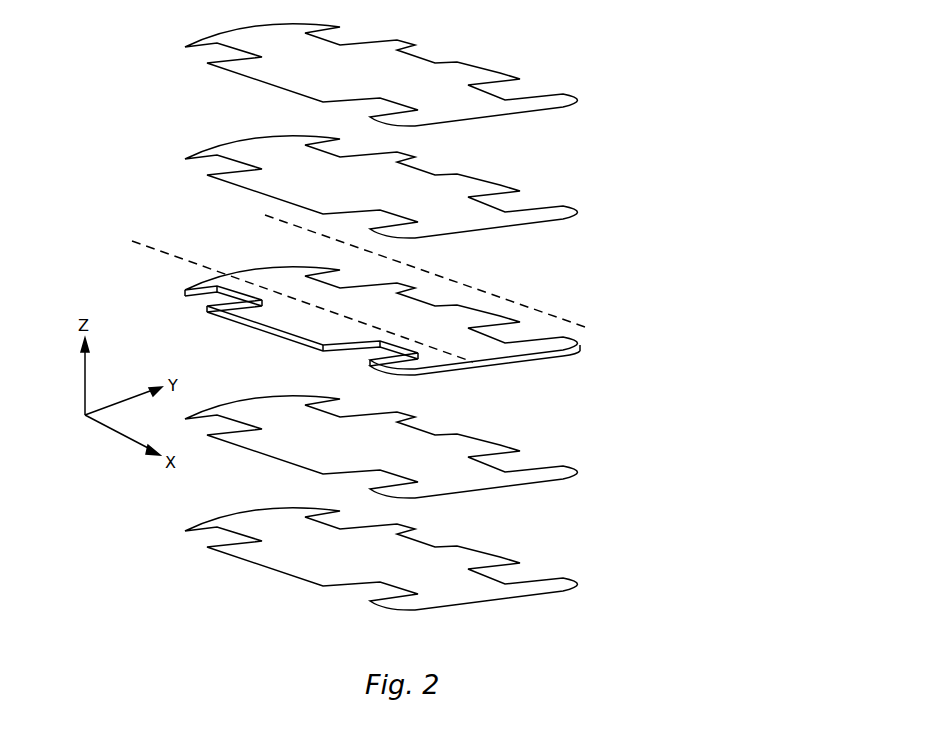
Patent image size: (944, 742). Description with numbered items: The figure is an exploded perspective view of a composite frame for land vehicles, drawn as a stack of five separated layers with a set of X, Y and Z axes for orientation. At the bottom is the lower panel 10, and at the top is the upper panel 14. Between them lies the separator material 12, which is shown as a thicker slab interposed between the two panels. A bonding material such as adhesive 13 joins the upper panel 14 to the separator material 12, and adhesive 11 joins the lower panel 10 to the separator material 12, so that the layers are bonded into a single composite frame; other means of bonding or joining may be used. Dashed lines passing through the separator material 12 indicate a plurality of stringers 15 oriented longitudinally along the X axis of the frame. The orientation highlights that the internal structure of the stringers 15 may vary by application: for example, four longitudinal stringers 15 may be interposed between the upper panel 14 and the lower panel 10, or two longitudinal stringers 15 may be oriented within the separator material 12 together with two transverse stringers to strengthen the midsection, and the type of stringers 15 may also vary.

The lower panel 10 is at (581, 586).
The adhesive 11 is at (581, 474).
The separator material 12 is at (581, 345).
The adhesive 13 is at (581, 214).
The upper panel 14 is at (581, 102).
The stringers 15 is at (170, 255).